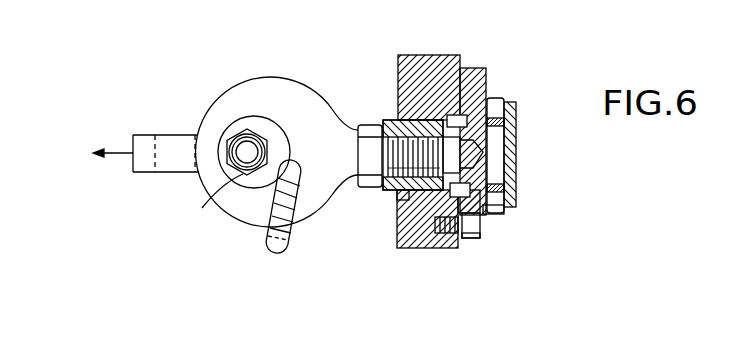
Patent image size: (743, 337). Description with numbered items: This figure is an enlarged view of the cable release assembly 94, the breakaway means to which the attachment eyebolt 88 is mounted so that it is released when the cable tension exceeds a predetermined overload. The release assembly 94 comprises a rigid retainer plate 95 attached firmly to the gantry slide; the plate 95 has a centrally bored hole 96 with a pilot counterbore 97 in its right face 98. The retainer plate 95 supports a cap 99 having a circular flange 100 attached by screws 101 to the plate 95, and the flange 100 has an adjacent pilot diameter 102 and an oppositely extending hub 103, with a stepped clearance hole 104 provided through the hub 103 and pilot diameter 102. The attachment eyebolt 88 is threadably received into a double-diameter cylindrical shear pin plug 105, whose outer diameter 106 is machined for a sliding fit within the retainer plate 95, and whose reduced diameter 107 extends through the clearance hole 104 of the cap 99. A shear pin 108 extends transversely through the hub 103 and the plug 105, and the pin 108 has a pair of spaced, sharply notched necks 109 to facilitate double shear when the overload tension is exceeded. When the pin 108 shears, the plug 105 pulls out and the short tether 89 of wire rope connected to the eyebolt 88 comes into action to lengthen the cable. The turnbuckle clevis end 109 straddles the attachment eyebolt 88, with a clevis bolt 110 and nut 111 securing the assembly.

The attachment eyebolt 88 is at (323, 93).
The tether 89 is at (288, 240).
The release assembly 94 is at (397, 249).
The retainer plate 95 is at (423, 249).
The centrally bored hole 96 is at (388, 122).
The pilot counterbore 97 is at (430, 118).
The right face 98 is at (462, 238).
The cap 99 is at (478, 238).
The circular flange 100 is at (468, 68).
The screws 101 is at (472, 238).
The pilot diameter 102 is at (455, 117).
The hub 103 is at (512, 101).
The stepped clearance hole 104 is at (460, 193).
The shear pin plug 105 is at (382, 190).
The outer diameter 106 is at (397, 200).
The reduced diameter 107 is at (488, 213).
The shear pin 108 is at (516, 143).
The notched necks 109 is at (183, 135).
The clevis bolt 110 is at (244, 171).
The nut 111 is at (238, 179).